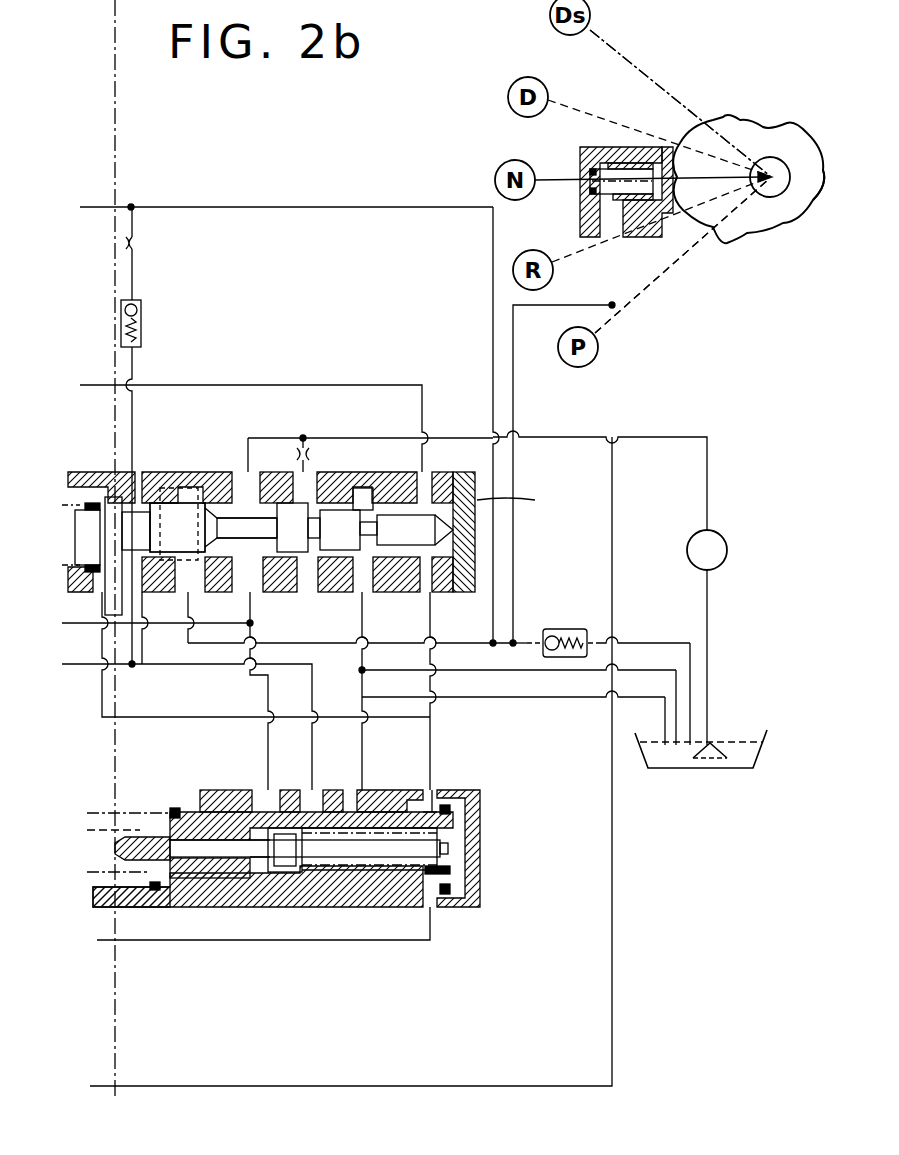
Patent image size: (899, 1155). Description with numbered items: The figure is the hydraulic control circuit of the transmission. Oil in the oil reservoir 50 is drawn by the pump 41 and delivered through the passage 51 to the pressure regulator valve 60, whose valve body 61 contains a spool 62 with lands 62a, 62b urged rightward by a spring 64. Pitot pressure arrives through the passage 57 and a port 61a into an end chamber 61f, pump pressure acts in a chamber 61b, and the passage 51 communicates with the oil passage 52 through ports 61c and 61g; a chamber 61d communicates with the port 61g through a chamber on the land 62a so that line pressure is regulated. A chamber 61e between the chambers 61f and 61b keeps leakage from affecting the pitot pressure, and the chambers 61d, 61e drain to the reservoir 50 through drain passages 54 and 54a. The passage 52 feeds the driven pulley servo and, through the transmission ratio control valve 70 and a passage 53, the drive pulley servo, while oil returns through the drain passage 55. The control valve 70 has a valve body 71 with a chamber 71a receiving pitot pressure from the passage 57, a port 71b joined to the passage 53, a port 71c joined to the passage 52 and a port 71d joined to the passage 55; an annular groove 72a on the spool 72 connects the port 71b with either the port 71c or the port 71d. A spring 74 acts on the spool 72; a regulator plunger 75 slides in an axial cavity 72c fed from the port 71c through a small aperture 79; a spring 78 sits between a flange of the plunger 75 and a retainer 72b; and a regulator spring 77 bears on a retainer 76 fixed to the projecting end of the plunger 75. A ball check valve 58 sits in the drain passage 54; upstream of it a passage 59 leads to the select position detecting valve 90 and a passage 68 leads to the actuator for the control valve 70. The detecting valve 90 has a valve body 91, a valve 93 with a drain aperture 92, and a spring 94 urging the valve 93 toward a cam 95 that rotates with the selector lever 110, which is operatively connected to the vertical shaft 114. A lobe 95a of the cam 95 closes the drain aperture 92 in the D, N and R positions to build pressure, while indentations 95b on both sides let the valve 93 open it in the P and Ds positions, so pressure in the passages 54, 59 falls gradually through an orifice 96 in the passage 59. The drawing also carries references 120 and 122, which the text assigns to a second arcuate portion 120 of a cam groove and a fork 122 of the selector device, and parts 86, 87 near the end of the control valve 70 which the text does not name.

The selector lever 110 is at (322, 206).
The select position detecting valve 90 is at (758, 117).
The vertical shaft 114 is at (772, 200).
The cam 95 is at (800, 215).
The lobe 95a is at (673, 213).
The indentations 95b is at (703, 125).
The valve body 91 is at (580, 218).
The drain aperture 92 is at (640, 147).
The valve 93 is at (620, 152).
The spring 94 is at (590, 174).
The pilot passage 96 is at (552, 314).
The passage 59 is at (515, 405).
The passage 51 is at (688, 436).
The pump 41 is at (728, 545).
The oil reservoir 50 is at (700, 769).
The passage 68 is at (614, 972).
The passage 57 is at (238, 384).
The valve body 61 is at (112, 476).
The port 61a is at (433, 480).
The chamber 61b is at (312, 486).
The port 61c is at (250, 480).
The chamber 61d is at (188, 630).
The chamber 61e is at (356, 586).
The end chamber 61f is at (526, 496).
The port 61g is at (192, 586).
The pressure regulator valve 60 is at (460, 593).
The spool 62 is at (255, 546).
The land 62a is at (167, 513).
The spool land 62b is at (228, 474).
The second arcuate portion 120 is at (190, 487).
The spring 64 is at (92, 590).
The oil passage 52 is at (97, 625).
The passage 53 is at (76, 666).
The fork 122 is at (153, 716).
The drain passage 54 is at (420, 640).
The drain passage 54a is at (662, 668).
The drain passage 55 is at (515, 698).
The ball check valve 58 is at (573, 628).
The transmission ratio control valve 70 is at (487, 902).
The valve body 71 is at (213, 802).
The chamber 71a is at (437, 796).
The port 71b is at (310, 798).
The port 71c is at (262, 800).
The port 71d is at (360, 798).
The spool 72 is at (216, 875).
The annular groove 72a is at (310, 880).
The retainer 72b is at (460, 850).
The axial cavity 72c is at (375, 880).
The spring 74 is at (172, 890).
The regulator plunger 75 is at (340, 878).
The retainer 76 is at (165, 815).
The regulator spring 77 is at (146, 889).
The spring 78 is at (413, 881).
The small aperture 79 is at (245, 878).
The guide sleeve 86 is at (178, 940).
The end plug 87 is at (466, 893).